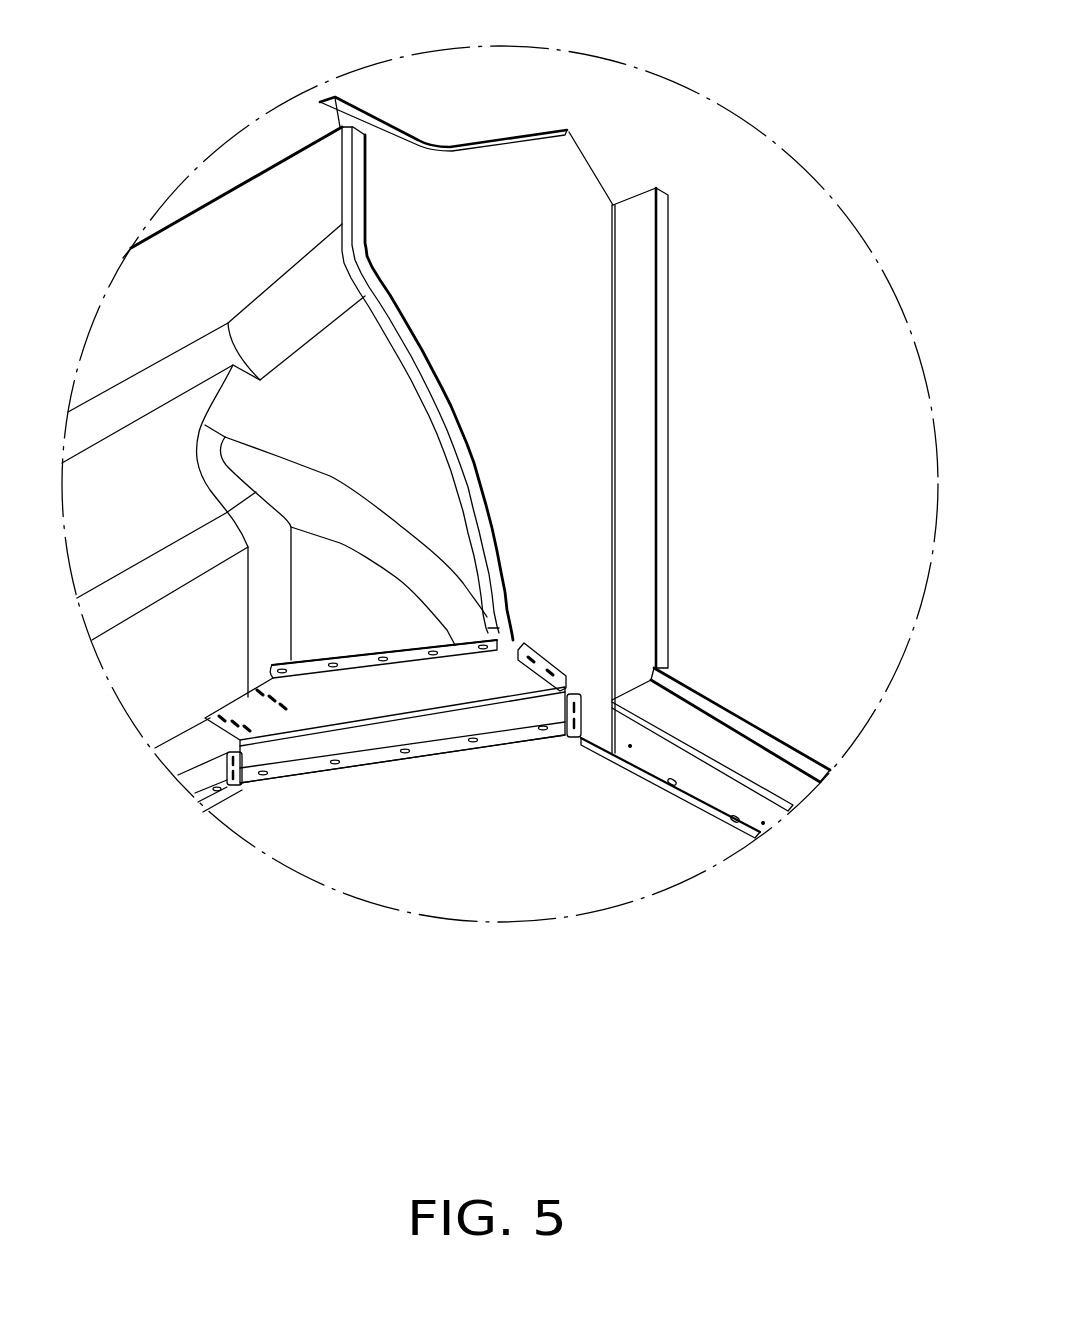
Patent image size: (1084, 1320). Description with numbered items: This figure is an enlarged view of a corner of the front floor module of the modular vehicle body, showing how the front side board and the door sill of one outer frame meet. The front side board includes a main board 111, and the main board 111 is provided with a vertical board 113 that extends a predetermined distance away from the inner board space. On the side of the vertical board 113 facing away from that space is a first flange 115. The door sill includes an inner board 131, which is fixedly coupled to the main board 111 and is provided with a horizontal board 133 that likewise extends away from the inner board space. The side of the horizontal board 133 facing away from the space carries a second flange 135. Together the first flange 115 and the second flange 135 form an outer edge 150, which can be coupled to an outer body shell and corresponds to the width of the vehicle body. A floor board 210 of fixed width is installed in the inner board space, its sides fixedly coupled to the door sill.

The main board 111 is at (587, 197).
The vertical board 113 is at (633, 268).
The first flange 115 is at (660, 618).
The inner board 131 is at (767, 817).
The horizontal board 133 is at (792, 787).
The second flange 135 is at (705, 707).
The outer edge 150 is at (474, 834).
The floor board 210 is at (405, 883).